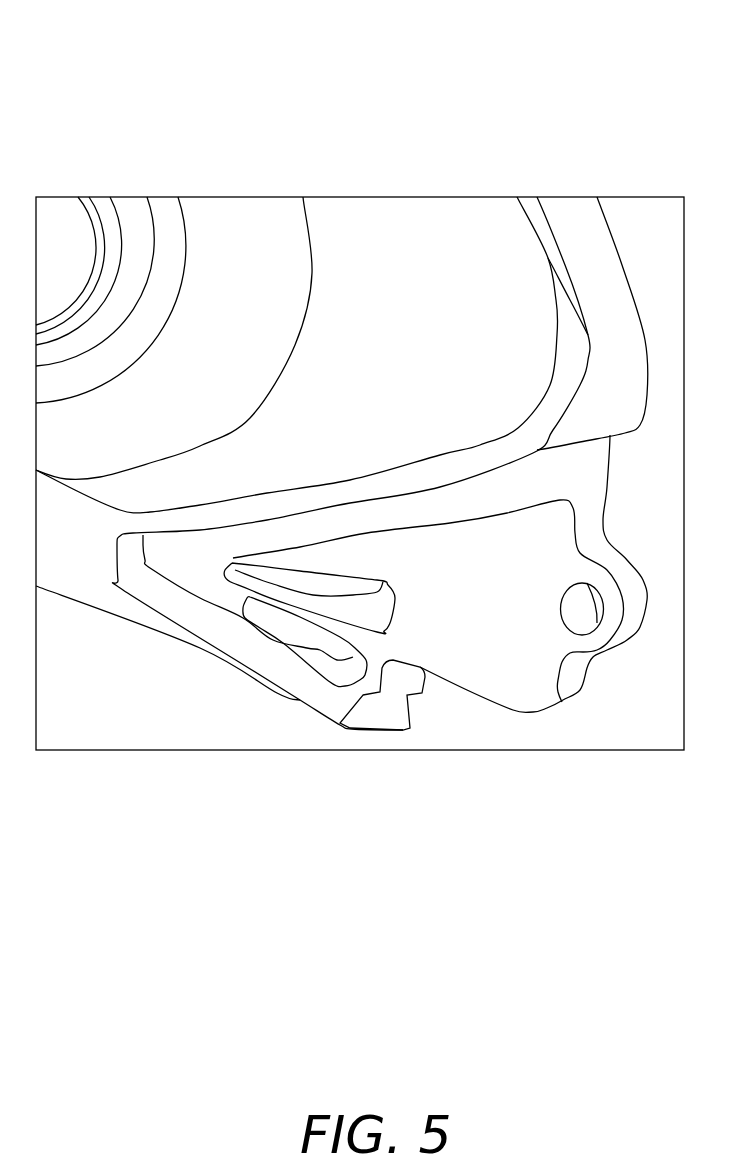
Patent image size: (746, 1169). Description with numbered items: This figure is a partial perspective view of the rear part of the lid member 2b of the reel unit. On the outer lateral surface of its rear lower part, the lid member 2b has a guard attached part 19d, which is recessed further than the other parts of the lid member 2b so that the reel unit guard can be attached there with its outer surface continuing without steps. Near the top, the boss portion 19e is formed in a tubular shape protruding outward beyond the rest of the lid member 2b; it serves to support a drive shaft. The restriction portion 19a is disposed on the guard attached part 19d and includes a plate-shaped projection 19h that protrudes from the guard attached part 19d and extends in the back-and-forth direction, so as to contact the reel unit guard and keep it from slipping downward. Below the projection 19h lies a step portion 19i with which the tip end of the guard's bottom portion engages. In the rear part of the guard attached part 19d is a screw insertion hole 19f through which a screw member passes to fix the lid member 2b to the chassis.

The boss portion 19e is at (117, 262).
The lid member 2b is at (408, 277).
The restriction portion 19a is at (295, 597).
The projection 19h is at (352, 607).
The step portion 19i is at (385, 708).
The guard attached part 19d is at (510, 623).
The screw insertion hole 19f is at (580, 593).